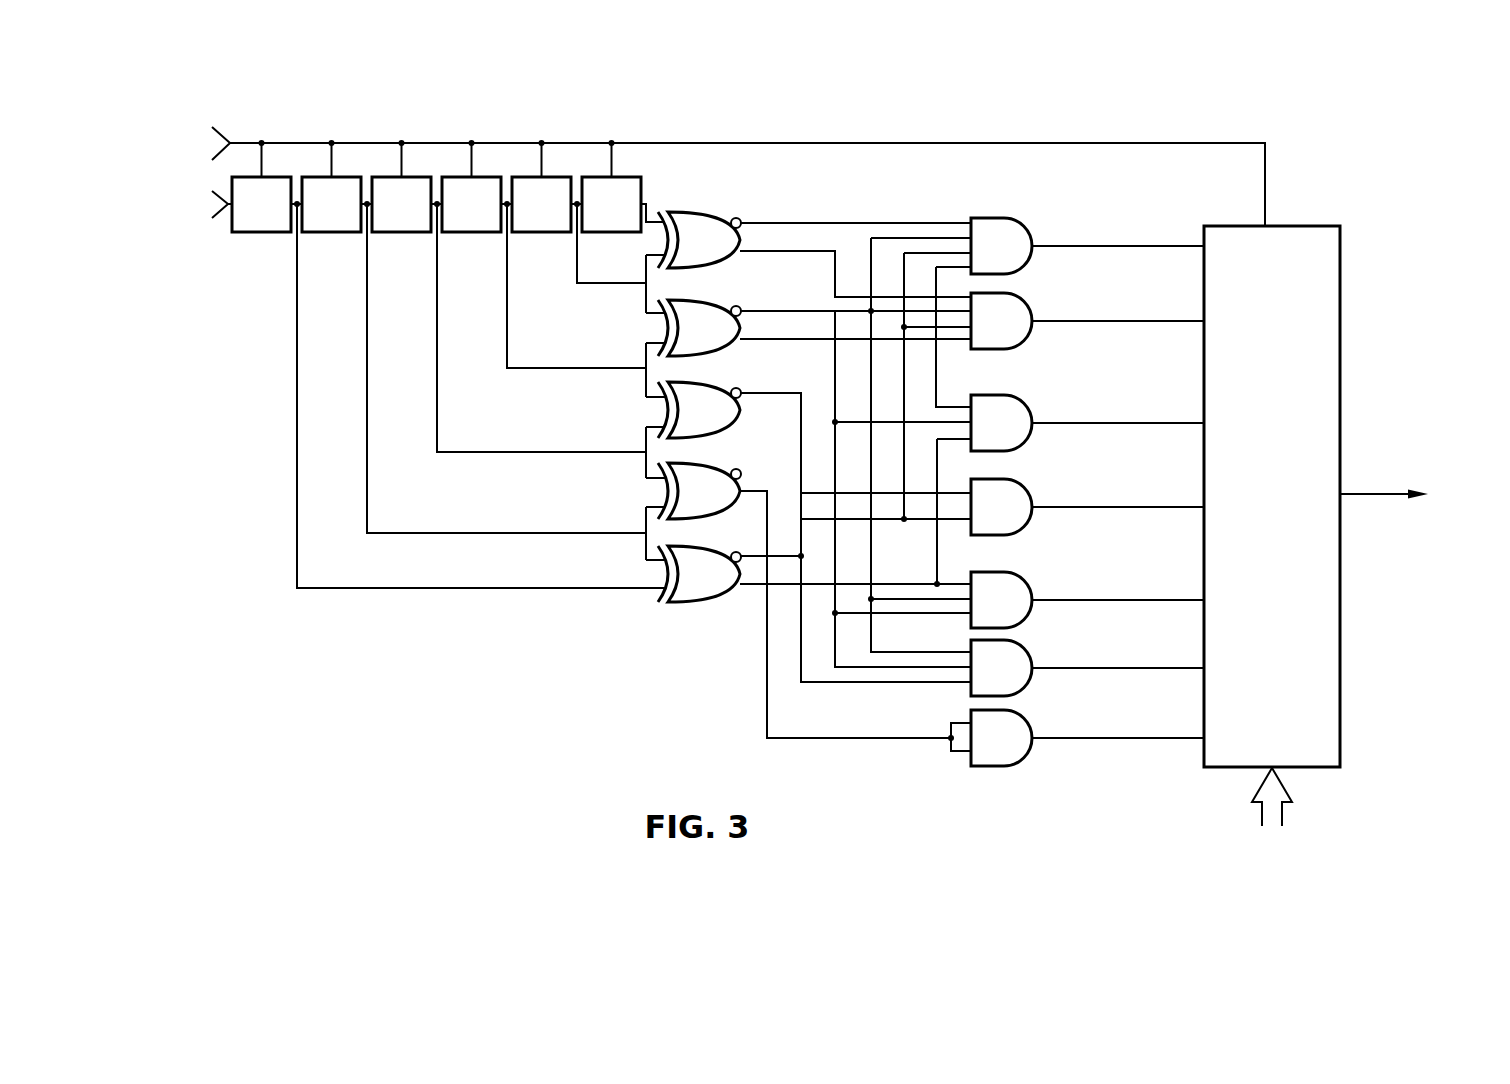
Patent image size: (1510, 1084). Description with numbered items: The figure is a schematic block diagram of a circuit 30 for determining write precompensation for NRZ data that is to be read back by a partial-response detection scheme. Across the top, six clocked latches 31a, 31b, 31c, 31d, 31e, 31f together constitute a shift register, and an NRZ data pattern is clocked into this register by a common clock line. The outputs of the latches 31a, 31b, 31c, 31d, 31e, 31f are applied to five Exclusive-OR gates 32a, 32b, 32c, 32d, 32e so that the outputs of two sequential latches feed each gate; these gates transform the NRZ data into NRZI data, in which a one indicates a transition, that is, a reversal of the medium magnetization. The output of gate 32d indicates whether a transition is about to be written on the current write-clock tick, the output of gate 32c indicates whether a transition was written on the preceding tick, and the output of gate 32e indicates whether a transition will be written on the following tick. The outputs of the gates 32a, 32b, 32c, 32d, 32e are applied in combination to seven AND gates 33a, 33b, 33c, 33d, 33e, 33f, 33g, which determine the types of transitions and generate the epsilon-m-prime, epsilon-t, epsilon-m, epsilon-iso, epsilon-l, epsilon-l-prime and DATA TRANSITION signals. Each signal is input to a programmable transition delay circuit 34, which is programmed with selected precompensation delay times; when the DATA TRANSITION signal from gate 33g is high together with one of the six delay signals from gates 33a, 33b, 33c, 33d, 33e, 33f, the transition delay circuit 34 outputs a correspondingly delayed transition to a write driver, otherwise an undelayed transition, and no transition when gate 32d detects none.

The circuit 30 is at (622, 108).
The clocked latch 31a is at (280, 216).
The clocked latch 31b is at (350, 216).
The clocked latch 31c is at (420, 216).
The clocked latch 31d is at (490, 216).
The clocked latch 31e is at (560, 216).
The clocked latch 31f is at (630, 216).
The Exclusive-OR gate 32a is at (724, 251).
The Exclusive-OR gate 32b is at (724, 339).
The Exclusive-OR gate 32c is at (724, 421).
The Exclusive-OR gate 32d is at (724, 502).
The Exclusive-OR gate 32e is at (724, 585).
The AND gate 33a is at (1025, 257).
The AND gate 33b is at (1025, 332).
The AND gate 33c is at (1025, 434).
The AND gate 33d is at (1025, 518).
The AND gate 33e is at (1025, 611).
The AND gate 33f is at (1025, 679).
The AND gate 33g is at (1025, 749).
The transition delay circuit 34 is at (1287, 564).